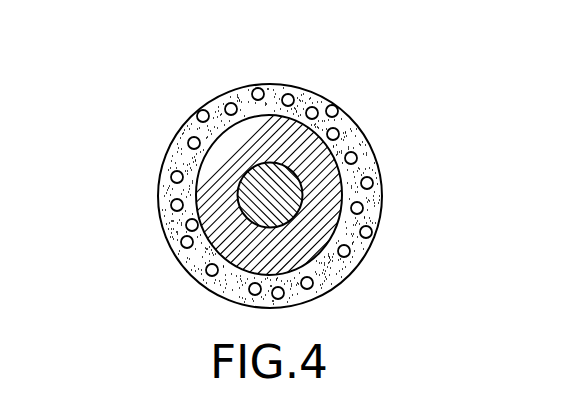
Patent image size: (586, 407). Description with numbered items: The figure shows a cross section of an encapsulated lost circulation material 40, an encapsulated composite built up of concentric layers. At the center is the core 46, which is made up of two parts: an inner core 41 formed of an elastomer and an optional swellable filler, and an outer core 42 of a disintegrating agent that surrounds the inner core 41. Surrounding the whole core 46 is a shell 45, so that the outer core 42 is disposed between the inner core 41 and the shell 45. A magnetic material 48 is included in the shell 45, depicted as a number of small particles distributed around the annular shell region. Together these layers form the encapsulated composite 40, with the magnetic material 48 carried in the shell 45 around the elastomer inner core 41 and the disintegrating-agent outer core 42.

The encapsulated lost circulation material 40 is at (122, 125).
The inner core 41 is at (278, 188).
The outer core 42 is at (313, 218).
The shell 45 is at (270, 84).
The core 46 is at (475, 155).
The magnetic material 48 is at (297, 292).